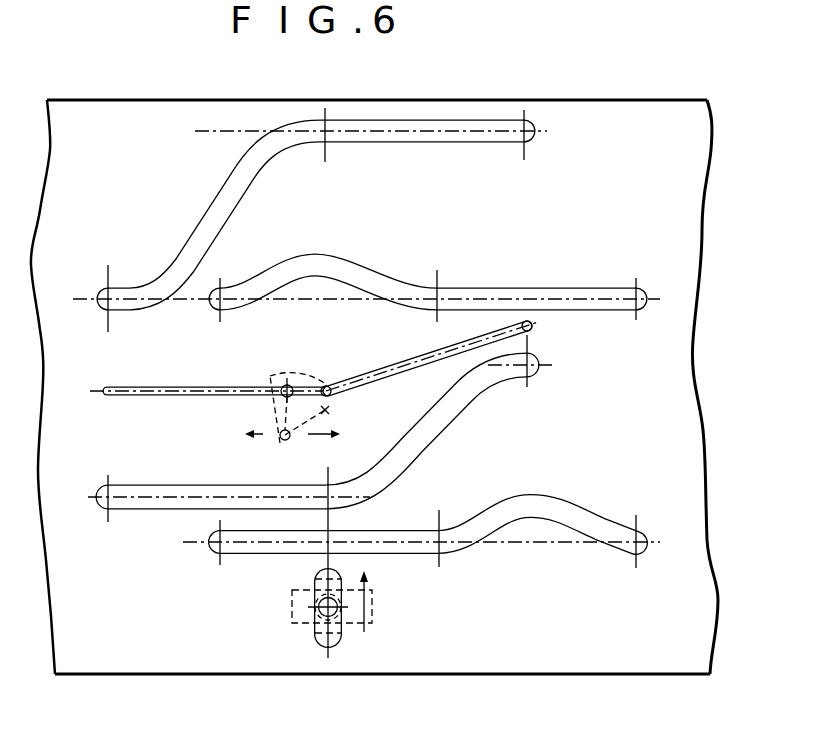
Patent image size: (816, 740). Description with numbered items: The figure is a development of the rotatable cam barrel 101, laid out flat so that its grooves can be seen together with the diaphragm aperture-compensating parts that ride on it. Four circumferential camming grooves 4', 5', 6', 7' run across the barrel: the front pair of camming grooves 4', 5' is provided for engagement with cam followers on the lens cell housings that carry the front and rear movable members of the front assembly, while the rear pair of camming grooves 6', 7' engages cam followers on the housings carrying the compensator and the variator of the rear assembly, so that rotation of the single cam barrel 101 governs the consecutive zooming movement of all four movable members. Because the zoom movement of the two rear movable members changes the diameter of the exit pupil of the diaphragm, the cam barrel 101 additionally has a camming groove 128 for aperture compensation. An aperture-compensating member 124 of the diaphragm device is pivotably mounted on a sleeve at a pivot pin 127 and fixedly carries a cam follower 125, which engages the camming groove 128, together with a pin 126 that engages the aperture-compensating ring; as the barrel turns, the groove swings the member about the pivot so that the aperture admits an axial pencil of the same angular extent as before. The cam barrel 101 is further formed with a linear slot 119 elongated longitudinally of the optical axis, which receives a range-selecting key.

The cam barrel 101 is at (585, 118).
The camming groove 4' is at (310, 221).
The camming groove 5' is at (366, 299).
The camming groove 6' is at (320, 440).
The camming groove 7' is at (421, 546).
The linear slot 119 is at (333, 641).
The aperture-compensating member 124 is at (333, 411).
The cam follower 125 is at (331, 383).
The pin 126 is at (280, 441).
The pivot pin 127 is at (288, 378).
The camming groove 128 is at (515, 337).